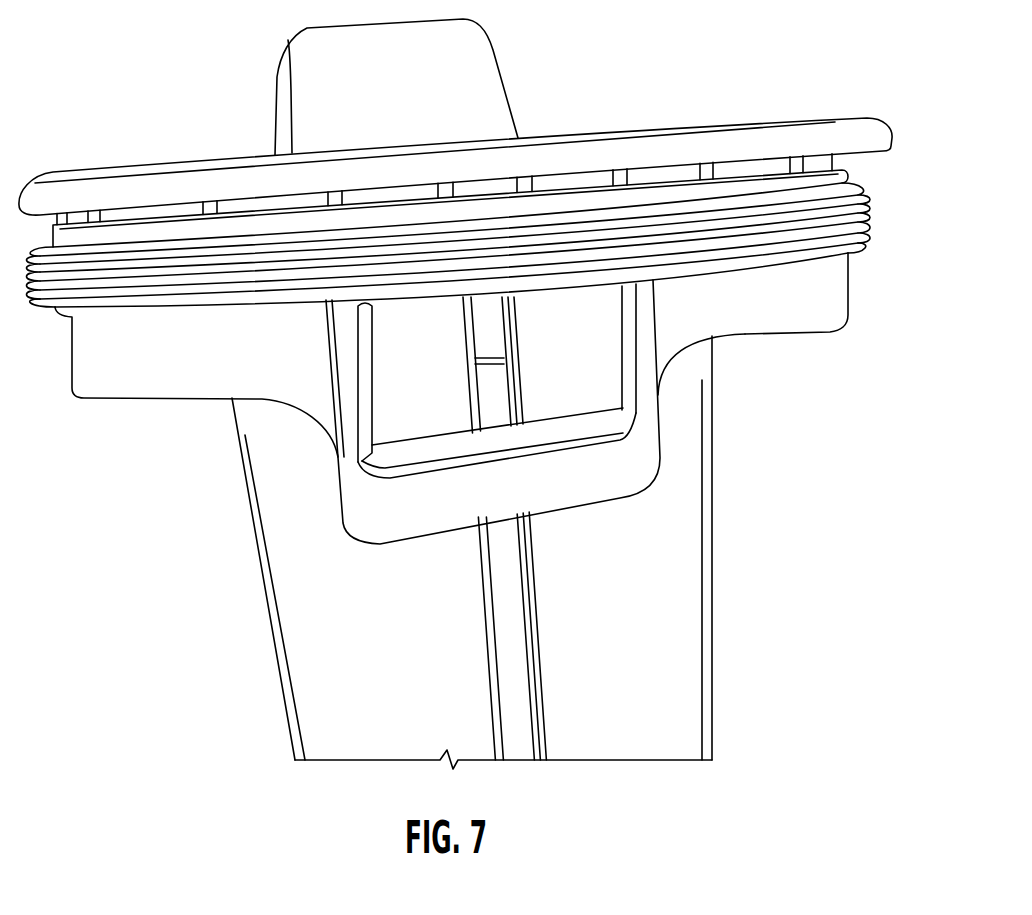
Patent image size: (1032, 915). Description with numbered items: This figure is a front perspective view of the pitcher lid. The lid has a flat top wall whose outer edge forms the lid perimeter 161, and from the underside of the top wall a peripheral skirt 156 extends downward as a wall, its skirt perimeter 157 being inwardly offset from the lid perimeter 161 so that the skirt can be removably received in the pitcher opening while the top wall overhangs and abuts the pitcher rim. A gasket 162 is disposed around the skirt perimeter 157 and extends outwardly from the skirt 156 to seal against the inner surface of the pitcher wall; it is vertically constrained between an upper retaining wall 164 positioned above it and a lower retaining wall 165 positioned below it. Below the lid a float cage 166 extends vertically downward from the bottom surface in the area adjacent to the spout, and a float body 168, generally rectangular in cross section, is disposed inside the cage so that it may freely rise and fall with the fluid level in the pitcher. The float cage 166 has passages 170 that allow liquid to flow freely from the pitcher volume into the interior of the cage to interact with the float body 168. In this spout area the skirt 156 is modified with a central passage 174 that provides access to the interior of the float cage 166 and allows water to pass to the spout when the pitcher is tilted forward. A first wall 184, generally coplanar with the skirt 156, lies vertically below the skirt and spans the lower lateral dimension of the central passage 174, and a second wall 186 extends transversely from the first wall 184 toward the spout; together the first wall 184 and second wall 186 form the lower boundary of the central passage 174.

The peripheral skirt 156 is at (820, 289).
The skirt perimeter 157 is at (778, 334).
The lid perimeter 161 is at (887, 149).
The gasket 162 is at (857, 211).
The upper retaining wall 164 is at (860, 182).
The lower retaining wall 165 is at (855, 238).
The float cage 166 is at (300, 658).
The float body 168 is at (510, 608).
The passages 170 is at (487, 345).
The central passage 174 is at (587, 336).
The first wall 184 is at (372, 518).
The second wall 186 is at (415, 463).